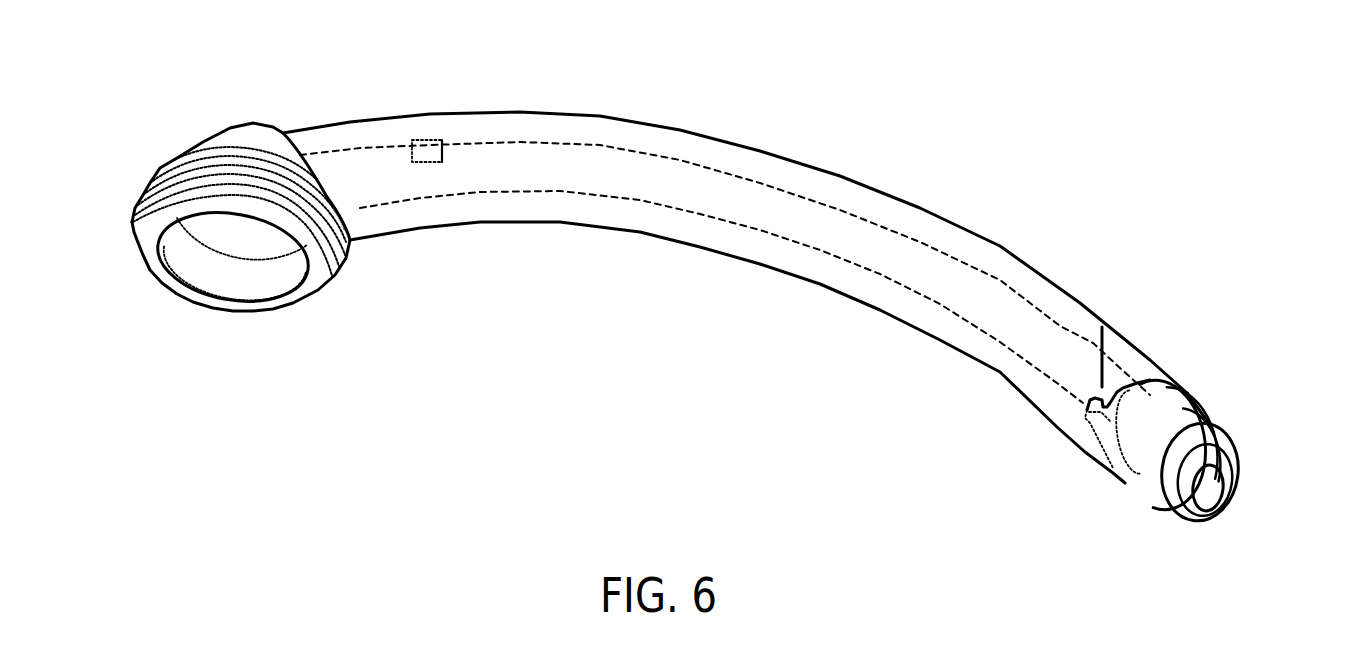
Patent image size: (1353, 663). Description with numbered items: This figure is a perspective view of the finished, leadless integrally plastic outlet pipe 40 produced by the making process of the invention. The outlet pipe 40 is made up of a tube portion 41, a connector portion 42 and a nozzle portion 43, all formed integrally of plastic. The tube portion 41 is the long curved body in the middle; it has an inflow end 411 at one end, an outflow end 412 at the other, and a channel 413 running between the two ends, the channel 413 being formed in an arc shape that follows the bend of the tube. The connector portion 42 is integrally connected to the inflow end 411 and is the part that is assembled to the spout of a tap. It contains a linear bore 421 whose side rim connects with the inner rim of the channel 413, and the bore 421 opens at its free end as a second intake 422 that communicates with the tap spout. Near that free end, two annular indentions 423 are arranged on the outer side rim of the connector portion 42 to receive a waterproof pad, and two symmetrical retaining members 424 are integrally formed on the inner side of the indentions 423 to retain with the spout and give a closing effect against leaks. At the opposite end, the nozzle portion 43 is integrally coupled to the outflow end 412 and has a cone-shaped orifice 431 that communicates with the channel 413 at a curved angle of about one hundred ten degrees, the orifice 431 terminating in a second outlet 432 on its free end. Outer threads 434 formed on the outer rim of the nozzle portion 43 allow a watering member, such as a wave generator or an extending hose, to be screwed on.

The integrally plastic outlet pipe 40 is at (695, 304).
The tube portion 41 is at (729, 243).
The inflow end 411 is at (1102, 335).
The outflow end 412 is at (320, 128).
The channel 413 is at (667, 167).
The connector portion 42 is at (1167, 455).
The bore 421 is at (1199, 488).
The second intake 422 is at (1222, 485).
The annular indentions 423 is at (1143, 475).
The retaining members 424 is at (1099, 426).
The nozzle portion 43 is at (199, 212).
The orifice 431 is at (239, 243).
The second outlet 432 is at (192, 258).
The outer threads 434 is at (165, 177).